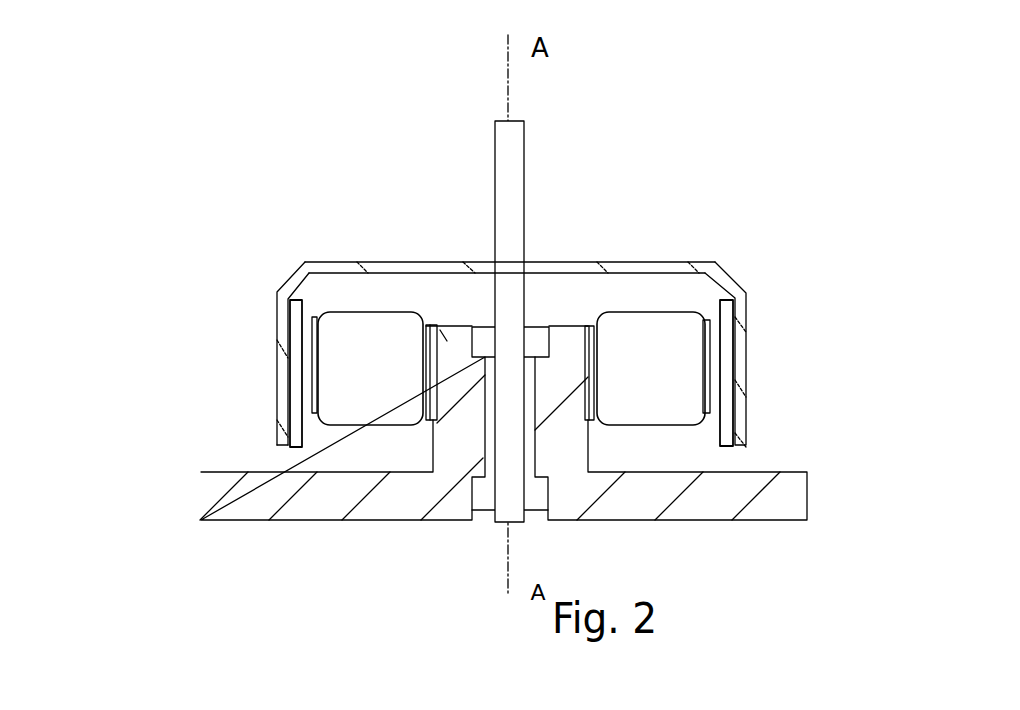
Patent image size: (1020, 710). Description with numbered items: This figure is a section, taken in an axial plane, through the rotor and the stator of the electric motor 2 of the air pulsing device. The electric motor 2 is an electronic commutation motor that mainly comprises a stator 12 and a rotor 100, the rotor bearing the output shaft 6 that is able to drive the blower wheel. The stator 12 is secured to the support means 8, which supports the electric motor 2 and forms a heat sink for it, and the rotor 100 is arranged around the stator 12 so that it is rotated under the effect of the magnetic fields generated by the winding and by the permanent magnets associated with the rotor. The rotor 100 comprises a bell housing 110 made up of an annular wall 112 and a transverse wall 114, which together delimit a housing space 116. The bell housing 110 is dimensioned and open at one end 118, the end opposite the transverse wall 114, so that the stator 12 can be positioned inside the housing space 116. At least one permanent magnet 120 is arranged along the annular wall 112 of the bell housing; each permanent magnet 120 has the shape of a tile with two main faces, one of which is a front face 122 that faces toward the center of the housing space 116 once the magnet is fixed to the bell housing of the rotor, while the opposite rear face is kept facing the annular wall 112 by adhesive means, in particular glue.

The electric motor 2 is at (223, 191).
The output shaft 6 is at (515, 177).
The support means 8 is at (760, 488).
The stator 12 is at (360, 340).
The rotor 100 is at (249, 384).
The bell housing 110 is at (731, 277).
The annular wall 112 is at (746, 348).
The transverse wall 114 is at (626, 260).
The housing space 116 is at (452, 300).
The open end 118 is at (322, 437).
The permanent magnet 120 is at (295, 323).
The front face 122 is at (713, 429).